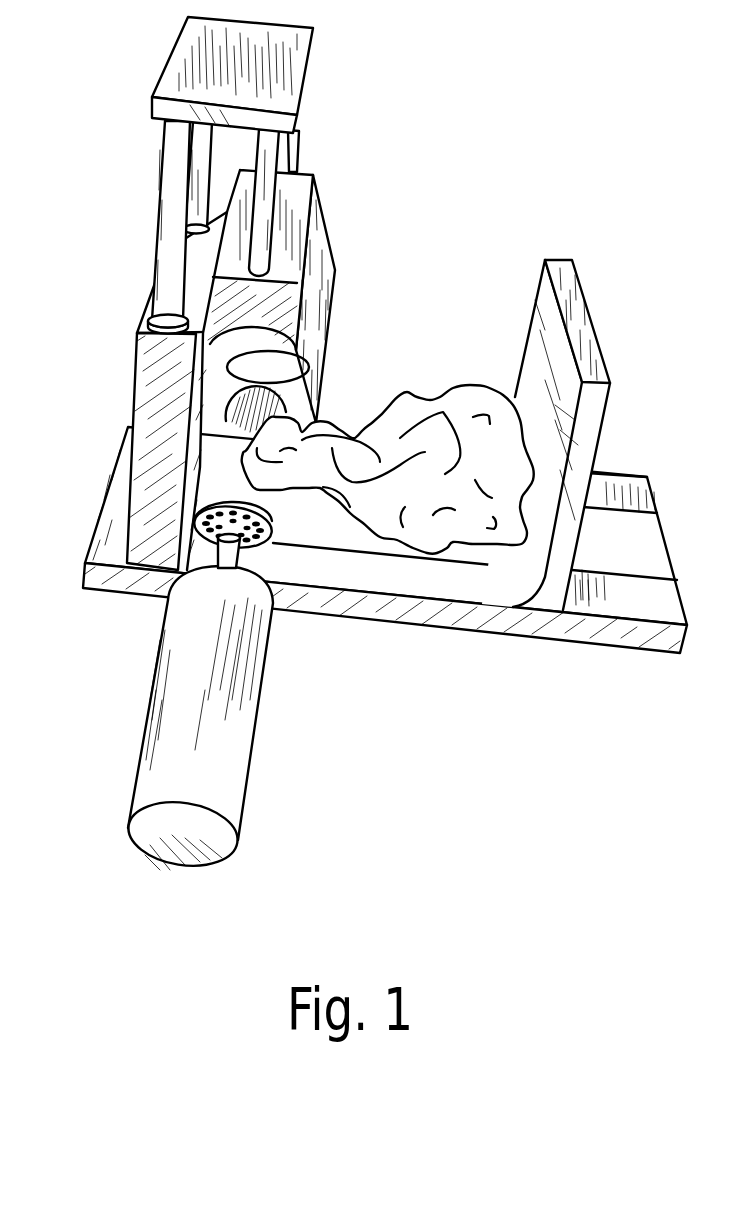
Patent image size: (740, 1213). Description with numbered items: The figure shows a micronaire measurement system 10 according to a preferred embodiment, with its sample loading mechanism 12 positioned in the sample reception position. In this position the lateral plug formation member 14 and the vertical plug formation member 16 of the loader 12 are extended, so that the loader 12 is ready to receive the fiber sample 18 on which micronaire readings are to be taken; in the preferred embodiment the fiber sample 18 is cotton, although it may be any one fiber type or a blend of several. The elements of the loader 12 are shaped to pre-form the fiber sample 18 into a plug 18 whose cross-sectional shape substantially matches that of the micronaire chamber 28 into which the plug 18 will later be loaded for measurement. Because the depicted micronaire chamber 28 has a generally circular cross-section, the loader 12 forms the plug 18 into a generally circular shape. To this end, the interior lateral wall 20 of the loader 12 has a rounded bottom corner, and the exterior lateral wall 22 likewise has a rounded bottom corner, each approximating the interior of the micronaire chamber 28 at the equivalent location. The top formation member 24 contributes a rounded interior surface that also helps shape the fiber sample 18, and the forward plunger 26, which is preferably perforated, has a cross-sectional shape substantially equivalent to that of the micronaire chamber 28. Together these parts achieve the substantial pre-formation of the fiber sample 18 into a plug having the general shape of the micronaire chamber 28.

The micronaire measurement system 10 is at (517, 809).
The sample loading mechanism 12 is at (498, 203).
The lateral plug formation member 14 is at (597, 318).
The vertical plug formation member 16 is at (292, 237).
The fiber sample 18 is at (500, 467).
The interior lateral wall 20 is at (207, 494).
The exterior lateral wall 22 is at (510, 579).
The top formation member 24 is at (241, 362).
The forward plunger 26 is at (257, 574).
The micronaire chamber 28 is at (318, 293).